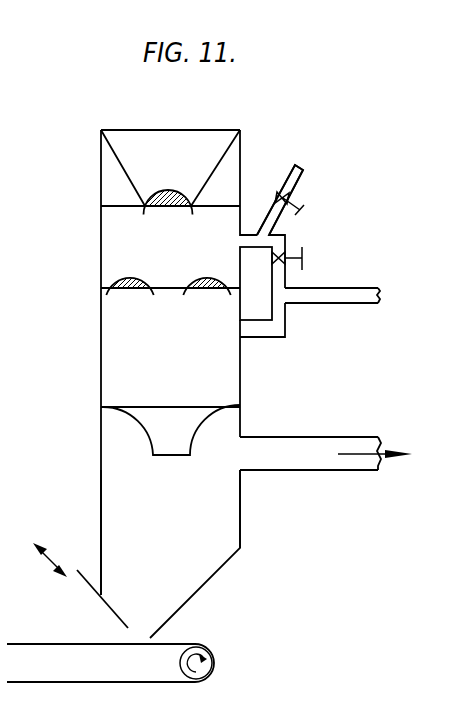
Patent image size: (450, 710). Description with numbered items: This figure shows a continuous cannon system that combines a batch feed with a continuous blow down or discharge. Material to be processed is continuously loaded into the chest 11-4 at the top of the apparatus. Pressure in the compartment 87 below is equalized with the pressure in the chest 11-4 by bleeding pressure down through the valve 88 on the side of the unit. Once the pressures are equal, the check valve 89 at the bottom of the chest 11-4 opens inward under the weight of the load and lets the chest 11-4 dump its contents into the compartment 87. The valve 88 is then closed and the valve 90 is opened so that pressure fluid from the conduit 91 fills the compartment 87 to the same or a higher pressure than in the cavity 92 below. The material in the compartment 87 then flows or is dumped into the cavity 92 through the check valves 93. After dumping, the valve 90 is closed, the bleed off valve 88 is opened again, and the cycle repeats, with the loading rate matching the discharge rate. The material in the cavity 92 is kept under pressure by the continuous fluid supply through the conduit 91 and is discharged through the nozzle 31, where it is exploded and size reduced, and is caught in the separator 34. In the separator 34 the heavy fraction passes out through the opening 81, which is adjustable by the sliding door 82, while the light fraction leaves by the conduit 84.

The chest 11-4 is at (155, 140).
The check valve 89 is at (176, 190).
The compartment 87 is at (193, 257).
The check valves 93 is at (140, 291).
The cavity 92 is at (190, 379).
The nozzle 31 is at (145, 430).
The separator 34 is at (188, 538).
The valve 88 is at (283, 198).
The valve 90 is at (302, 258).
The conduit 91 is at (339, 304).
The conduit 84 is at (288, 471).
The sliding door 82 is at (96, 596).
The opening 81 is at (138, 623).